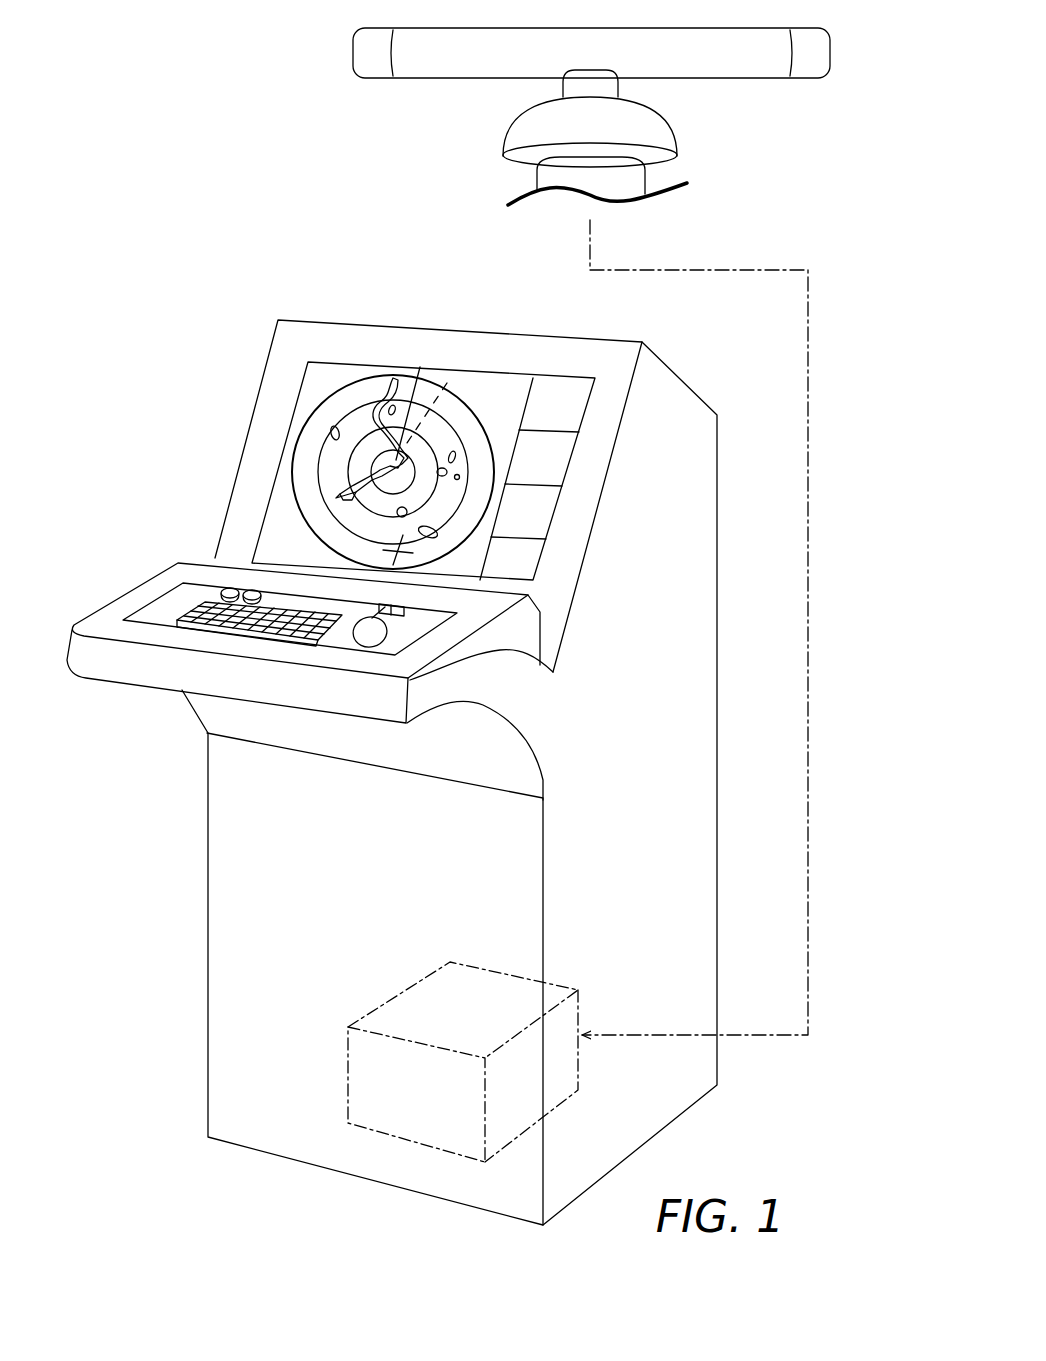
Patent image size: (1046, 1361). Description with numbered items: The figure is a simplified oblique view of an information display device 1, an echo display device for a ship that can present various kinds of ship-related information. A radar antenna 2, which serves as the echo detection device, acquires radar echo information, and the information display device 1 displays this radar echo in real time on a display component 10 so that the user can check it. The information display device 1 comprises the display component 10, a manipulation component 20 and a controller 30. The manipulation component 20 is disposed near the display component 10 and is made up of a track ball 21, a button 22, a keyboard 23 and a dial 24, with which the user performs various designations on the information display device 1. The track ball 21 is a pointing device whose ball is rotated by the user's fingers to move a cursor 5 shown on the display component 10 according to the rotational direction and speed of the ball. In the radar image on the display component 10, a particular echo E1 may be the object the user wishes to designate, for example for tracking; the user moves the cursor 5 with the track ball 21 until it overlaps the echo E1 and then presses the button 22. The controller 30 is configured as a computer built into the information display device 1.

The information display device 1 is at (165, 256).
The radar antenna 2 is at (724, 131).
The display component 10 is at (280, 419).
The echo E1 is at (334, 426).
The cursor 5 is at (405, 549).
The manipulation component 20 is at (191, 639).
The track ball 21 is at (382, 620).
The button 22 is at (389, 604).
The keyboard 23 is at (207, 601).
The dial 24 is at (231, 588).
The controller 30 is at (348, 1072).